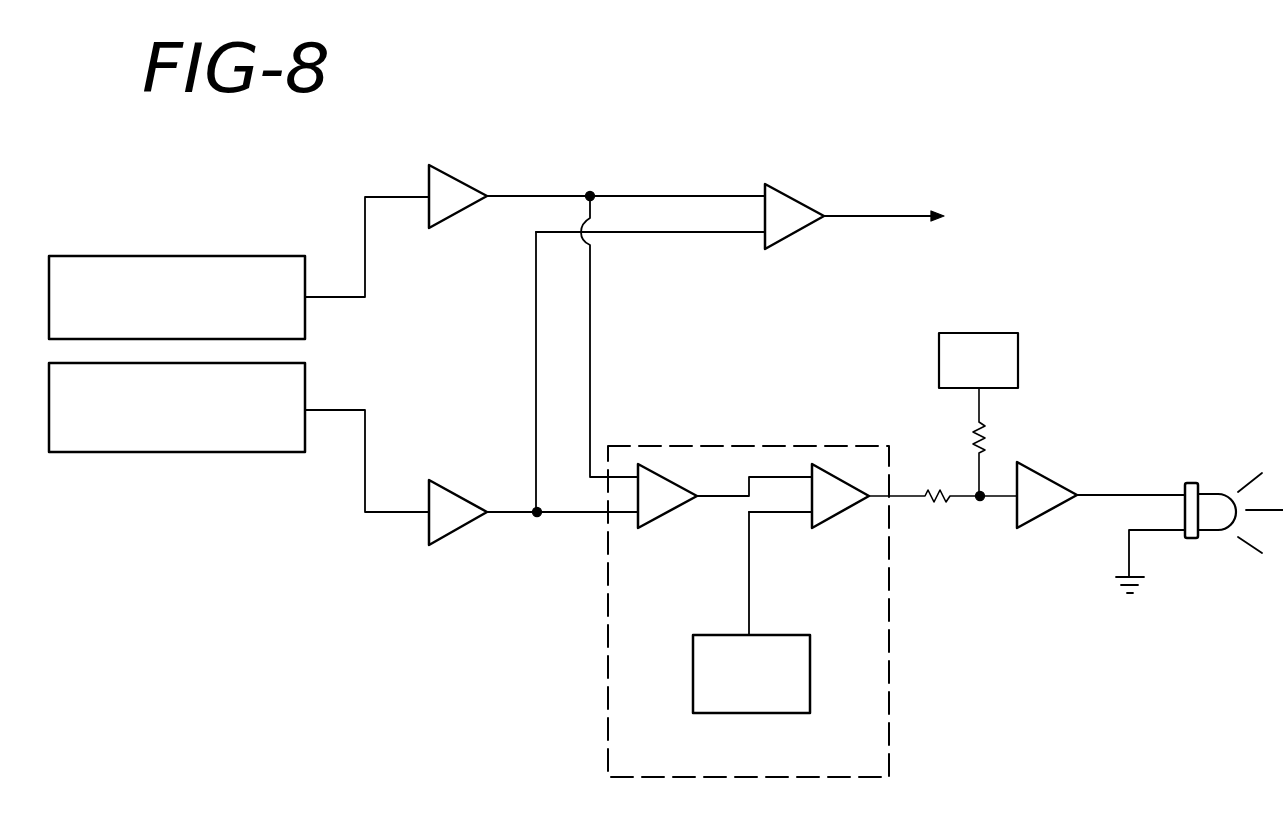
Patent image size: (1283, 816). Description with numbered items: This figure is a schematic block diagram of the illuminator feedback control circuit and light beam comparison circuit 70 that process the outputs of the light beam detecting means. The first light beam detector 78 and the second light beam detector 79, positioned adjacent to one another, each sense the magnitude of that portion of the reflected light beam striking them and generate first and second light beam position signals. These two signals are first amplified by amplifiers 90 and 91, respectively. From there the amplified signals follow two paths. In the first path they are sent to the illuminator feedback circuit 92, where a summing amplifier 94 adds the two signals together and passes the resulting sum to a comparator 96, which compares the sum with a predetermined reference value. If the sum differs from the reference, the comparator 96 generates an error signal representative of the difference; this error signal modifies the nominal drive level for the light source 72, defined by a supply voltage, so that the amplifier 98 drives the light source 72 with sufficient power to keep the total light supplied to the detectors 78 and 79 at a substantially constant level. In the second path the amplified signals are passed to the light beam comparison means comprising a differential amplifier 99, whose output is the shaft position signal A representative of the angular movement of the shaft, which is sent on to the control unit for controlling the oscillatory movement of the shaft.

The detector circuit 70 is at (318, 598).
The light source 72 is at (1192, 483).
The first light beam detector 78 is at (208, 256).
The second light beam detector 79 is at (197, 452).
The amplifier 90 is at (462, 175).
The amplifier 91 is at (460, 528).
The illuminator feedback circuit 92 is at (760, 446).
The summing amplifier 94 is at (662, 520).
The comparator 96 is at (832, 520).
The amplifier 98 is at (1040, 472).
The differential amplifier 99 is at (797, 197).